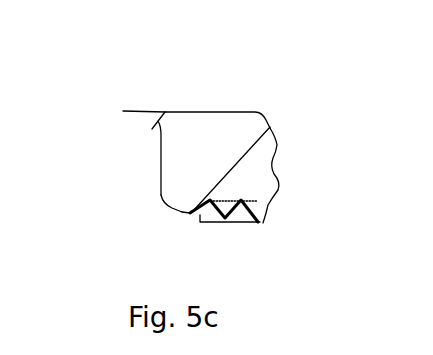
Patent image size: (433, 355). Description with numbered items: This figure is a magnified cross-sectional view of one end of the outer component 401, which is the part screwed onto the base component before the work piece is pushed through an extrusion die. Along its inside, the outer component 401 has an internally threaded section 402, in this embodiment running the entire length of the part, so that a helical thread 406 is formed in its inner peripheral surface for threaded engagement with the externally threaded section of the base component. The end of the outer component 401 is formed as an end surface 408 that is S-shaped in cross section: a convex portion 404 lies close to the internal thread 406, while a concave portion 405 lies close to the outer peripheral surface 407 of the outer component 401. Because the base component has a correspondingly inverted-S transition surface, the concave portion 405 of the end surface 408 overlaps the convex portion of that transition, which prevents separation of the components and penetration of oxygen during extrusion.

The outer component 401 is at (193, 92).
The internally threaded section 402 is at (215, 223).
The convex portion 404 is at (185, 211).
The concave portion 405 is at (158, 131).
The helical thread 406 is at (258, 212).
The outer peripheral surface 407 is at (160, 115).
The end surface 408 is at (163, 200).